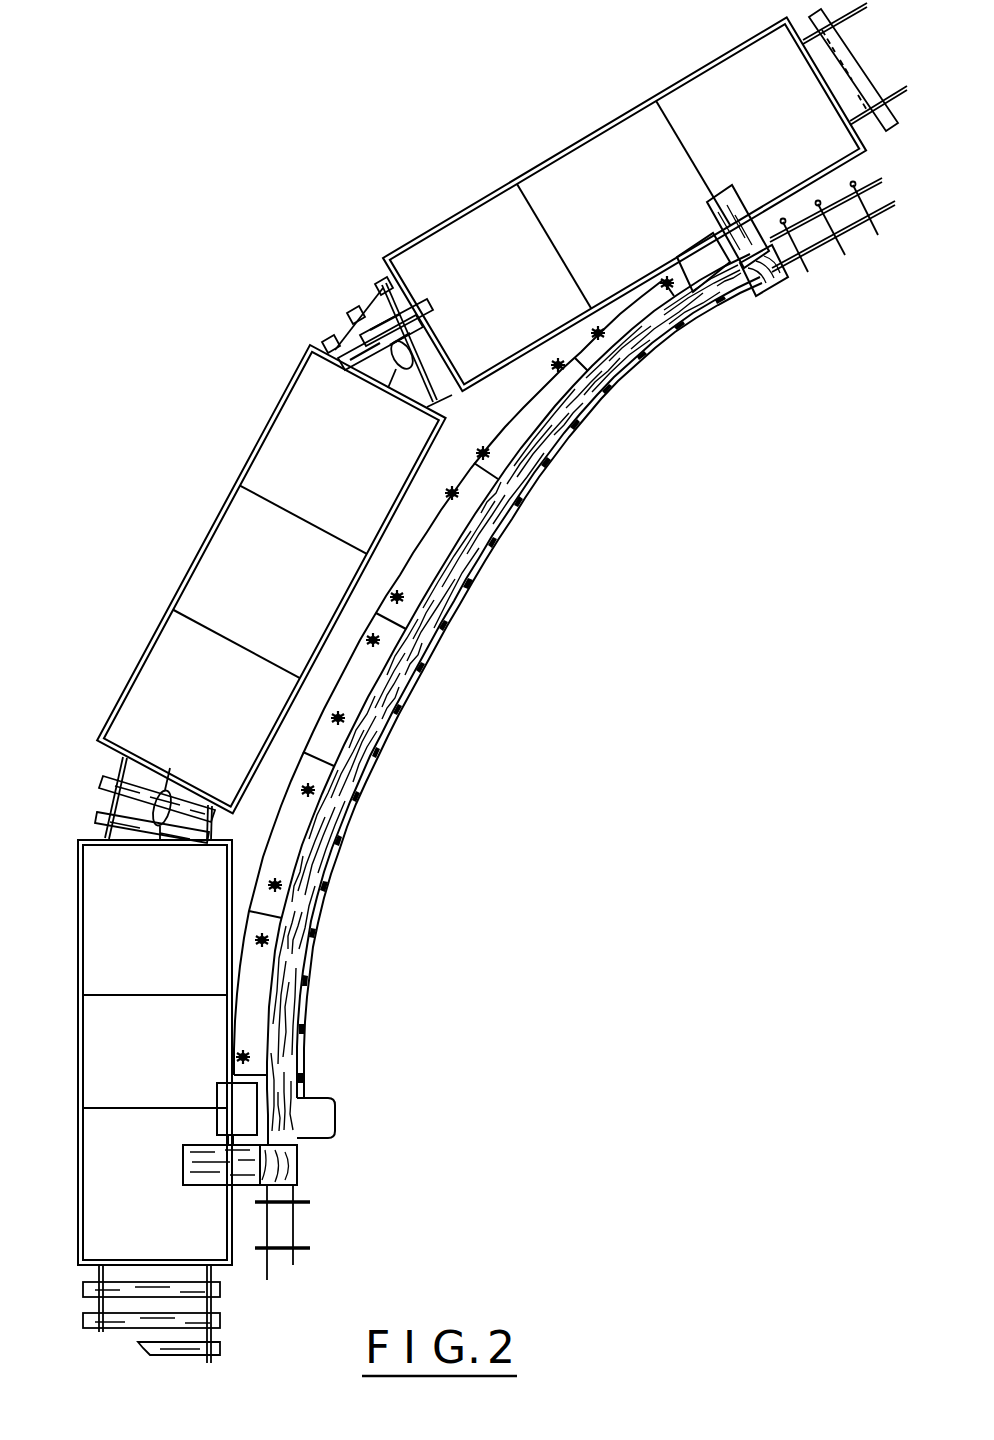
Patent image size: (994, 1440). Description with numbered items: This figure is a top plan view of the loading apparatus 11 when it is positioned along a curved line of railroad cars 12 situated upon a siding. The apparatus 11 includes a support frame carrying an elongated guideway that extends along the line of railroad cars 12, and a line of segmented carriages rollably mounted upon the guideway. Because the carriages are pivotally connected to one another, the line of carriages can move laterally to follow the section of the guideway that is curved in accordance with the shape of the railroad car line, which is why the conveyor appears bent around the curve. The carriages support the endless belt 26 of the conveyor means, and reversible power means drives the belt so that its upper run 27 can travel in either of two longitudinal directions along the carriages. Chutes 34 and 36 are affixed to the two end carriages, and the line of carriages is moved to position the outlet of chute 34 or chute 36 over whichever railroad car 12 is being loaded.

The loading apparatus 11 is at (368, 1137).
The railroad cars 12 is at (603, 126).
The endless belt 26 is at (390, 690).
The upper run of the belt 27 is at (495, 538).
The chute 34 is at (193, 1145).
The chute 36 is at (717, 186).